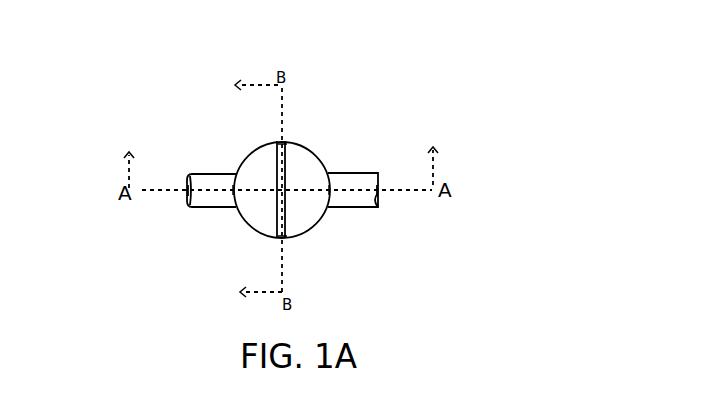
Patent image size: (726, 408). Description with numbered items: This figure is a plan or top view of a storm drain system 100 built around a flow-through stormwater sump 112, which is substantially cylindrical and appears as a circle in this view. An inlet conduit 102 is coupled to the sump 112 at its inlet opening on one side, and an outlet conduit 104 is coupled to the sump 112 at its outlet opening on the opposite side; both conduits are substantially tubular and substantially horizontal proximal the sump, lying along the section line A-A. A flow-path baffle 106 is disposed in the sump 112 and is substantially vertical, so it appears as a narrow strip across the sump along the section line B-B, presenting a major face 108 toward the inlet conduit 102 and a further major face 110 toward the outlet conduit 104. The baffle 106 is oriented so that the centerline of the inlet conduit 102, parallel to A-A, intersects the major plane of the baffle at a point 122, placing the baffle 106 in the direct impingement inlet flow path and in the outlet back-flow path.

The system 100 is at (556, 109).
The inlet conduit 102 is at (322, 163).
The outlet conduit 104 is at (188, 172).
The flow-path baffle 106 is at (285, 202).
The major face 108 is at (272, 161).
The further major face 110 is at (285, 161).
The flow-through stormwater sump 112 is at (378, 173).
The point 122 is at (287, 190).